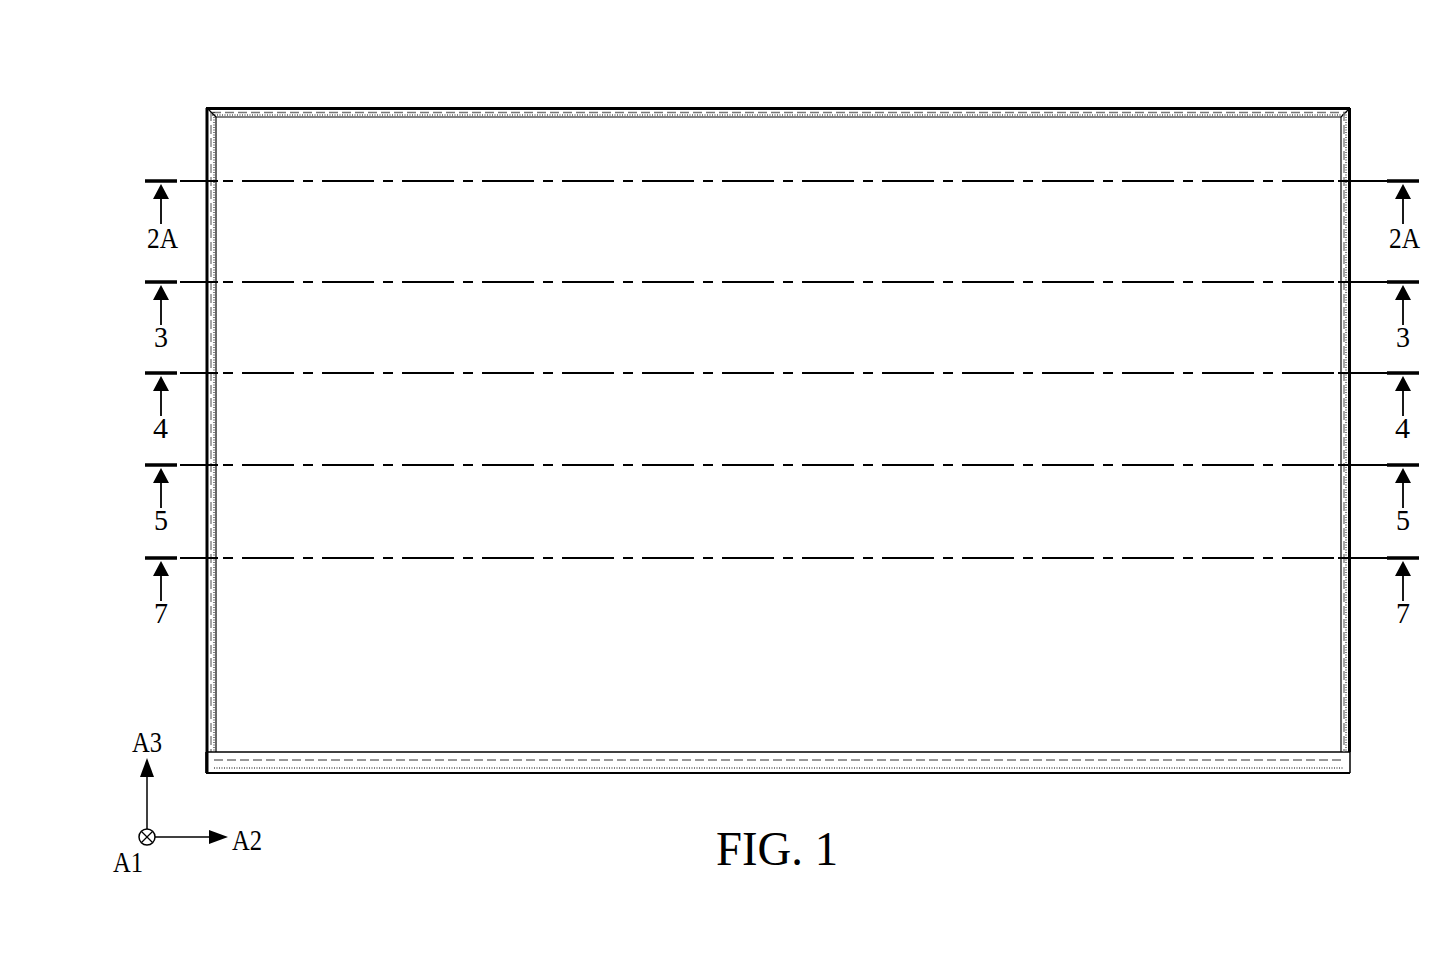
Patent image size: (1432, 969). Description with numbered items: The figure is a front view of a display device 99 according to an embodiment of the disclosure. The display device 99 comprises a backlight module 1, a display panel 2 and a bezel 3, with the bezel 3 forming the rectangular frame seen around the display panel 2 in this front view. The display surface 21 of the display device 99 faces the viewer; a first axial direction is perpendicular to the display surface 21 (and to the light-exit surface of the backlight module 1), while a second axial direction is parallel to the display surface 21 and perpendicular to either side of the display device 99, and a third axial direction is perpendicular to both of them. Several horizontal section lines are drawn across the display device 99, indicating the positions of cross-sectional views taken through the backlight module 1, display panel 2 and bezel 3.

The display device 99 is at (262, 51).
The backlight module 1 is at (203, 139).
The display panel 2 is at (1133, 150).
The bezel 3 is at (1351, 137).
The display surface 21 is at (430, 724).